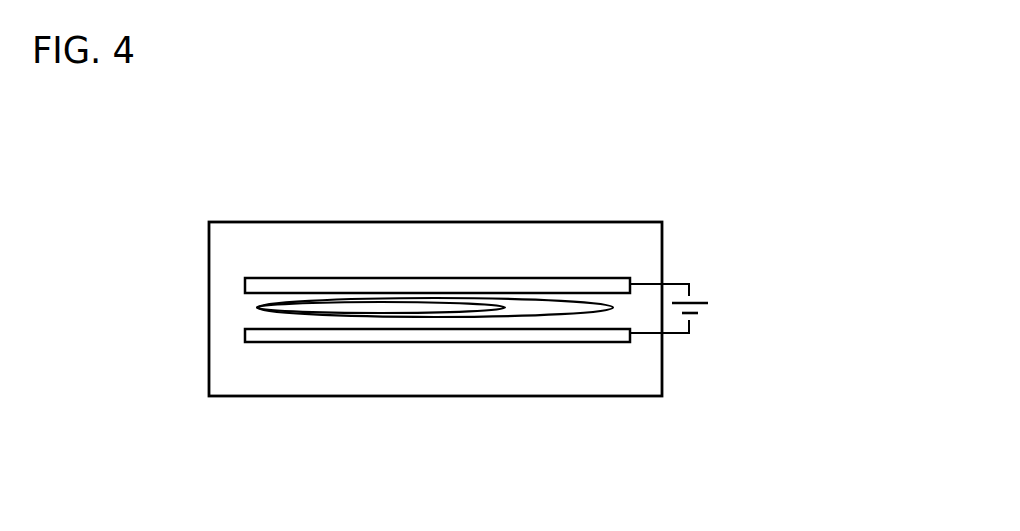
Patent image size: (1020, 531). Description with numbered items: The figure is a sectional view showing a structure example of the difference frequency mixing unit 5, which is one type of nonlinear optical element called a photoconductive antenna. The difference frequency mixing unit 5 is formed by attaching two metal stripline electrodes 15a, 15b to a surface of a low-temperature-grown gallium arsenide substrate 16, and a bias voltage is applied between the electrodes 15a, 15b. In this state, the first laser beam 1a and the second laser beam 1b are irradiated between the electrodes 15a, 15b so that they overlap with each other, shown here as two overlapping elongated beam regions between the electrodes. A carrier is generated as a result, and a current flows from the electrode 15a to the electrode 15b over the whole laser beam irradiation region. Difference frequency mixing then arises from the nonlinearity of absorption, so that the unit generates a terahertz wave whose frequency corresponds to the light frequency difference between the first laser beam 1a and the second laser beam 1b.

The difference frequency mixing unit 5 is at (262, 168).
The first laser beam 1a is at (324, 309).
The second laser beam 1b is at (543, 303).
The metal stripline electrode 15a is at (477, 285).
The metal stripline electrode 15b is at (282, 335).
The low-temperature-grown gallium arsenide substrate 16 is at (527, 373).